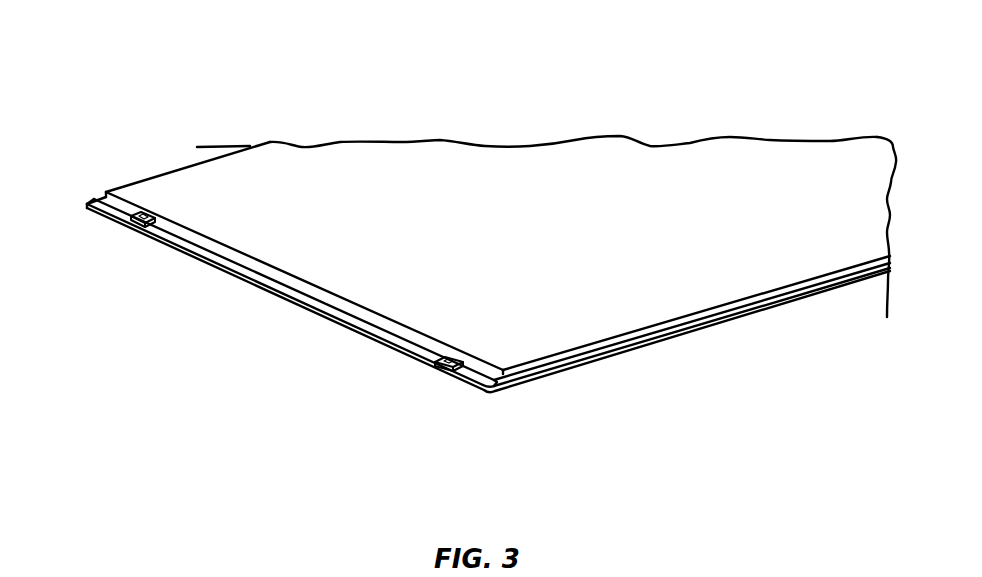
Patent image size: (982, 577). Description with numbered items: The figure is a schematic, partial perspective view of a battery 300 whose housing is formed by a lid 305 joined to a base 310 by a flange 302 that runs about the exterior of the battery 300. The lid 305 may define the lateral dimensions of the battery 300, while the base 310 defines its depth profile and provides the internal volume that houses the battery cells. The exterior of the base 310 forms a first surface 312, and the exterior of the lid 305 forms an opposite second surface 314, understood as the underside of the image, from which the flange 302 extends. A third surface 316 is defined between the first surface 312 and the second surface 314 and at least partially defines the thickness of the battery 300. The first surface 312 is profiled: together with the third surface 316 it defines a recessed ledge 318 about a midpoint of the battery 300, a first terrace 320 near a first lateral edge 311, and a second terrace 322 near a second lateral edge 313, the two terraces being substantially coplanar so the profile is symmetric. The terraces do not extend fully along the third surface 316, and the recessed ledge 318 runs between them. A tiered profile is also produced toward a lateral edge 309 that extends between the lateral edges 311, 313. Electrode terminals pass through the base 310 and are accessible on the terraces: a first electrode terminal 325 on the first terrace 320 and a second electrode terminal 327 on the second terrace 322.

The battery 300 is at (137, 74).
The flange 302 is at (575, 367).
The lid 305 is at (728, 320).
The lateral edge 309 is at (282, 299).
The base 310 is at (615, 158).
The first lateral edge 311 is at (212, 166).
The first surface 312 is at (473, 164).
The second lateral edge 313 is at (658, 336).
The second surface 314 is at (790, 298).
The third surface 316 is at (340, 301).
The recessed ledge 318 is at (242, 259).
The first terrace 320 is at (92, 205).
The second terrace 322 is at (498, 389).
The first electrode terminal 325 is at (138, 229).
The second electrode terminal 327 is at (446, 368).